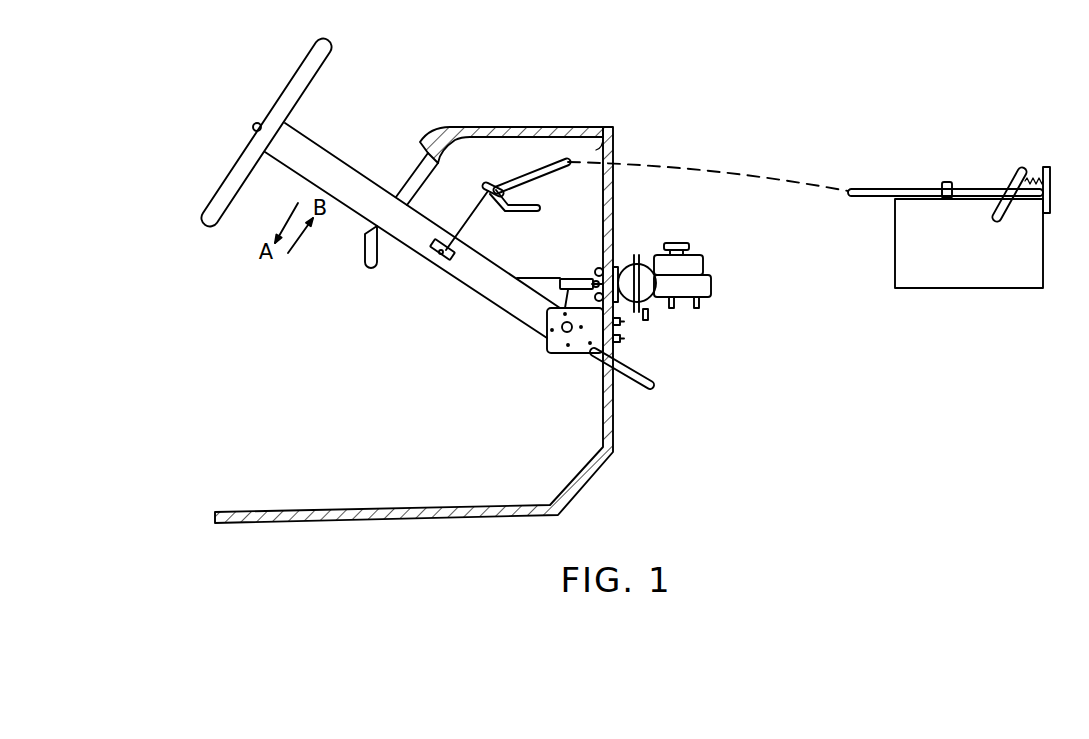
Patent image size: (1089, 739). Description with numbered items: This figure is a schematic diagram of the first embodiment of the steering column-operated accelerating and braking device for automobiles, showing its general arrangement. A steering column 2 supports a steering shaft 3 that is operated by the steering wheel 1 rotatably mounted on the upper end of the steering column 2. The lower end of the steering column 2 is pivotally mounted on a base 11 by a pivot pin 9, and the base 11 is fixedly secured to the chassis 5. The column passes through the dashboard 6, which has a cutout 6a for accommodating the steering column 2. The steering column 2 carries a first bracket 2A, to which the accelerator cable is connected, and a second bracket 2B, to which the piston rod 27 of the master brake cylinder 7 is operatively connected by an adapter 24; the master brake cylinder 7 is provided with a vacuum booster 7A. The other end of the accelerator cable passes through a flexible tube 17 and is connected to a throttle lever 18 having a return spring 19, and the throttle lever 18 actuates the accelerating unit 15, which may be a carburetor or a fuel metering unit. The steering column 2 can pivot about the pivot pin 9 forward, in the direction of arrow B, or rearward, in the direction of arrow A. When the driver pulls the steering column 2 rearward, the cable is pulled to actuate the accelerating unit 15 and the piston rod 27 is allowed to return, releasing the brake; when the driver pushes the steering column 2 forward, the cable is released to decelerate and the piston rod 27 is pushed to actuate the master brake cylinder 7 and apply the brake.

The steering wheel 1 is at (313, 68).
The steering column 2 is at (323, 162).
The first bracket 2A is at (440, 259).
The second bracket 2B is at (536, 279).
The steering shaft 3 is at (253, 126).
The chassis 5 is at (612, 150).
The dashboard 6 is at (504, 128).
The cutout 6a is at (421, 185).
The master brake cylinder 7 is at (686, 302).
The vacuum booster 7A is at (645, 262).
The pivot pin 9 is at (563, 325).
The base 11 is at (596, 343).
The accelerating unit 15 is at (977, 275).
The flexible tube 17 is at (861, 189).
The throttle lever 18 is at (1025, 172).
The return spring 19 is at (1043, 168).
The adapter 24 is at (580, 279).
The piston rod 27 is at (602, 268).